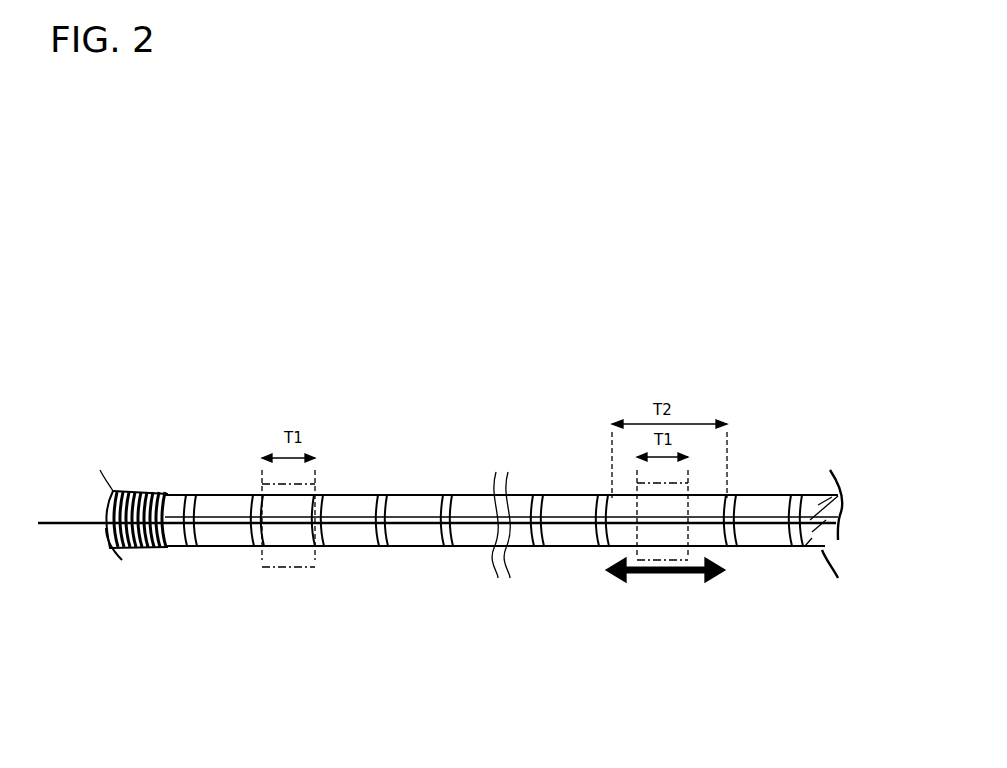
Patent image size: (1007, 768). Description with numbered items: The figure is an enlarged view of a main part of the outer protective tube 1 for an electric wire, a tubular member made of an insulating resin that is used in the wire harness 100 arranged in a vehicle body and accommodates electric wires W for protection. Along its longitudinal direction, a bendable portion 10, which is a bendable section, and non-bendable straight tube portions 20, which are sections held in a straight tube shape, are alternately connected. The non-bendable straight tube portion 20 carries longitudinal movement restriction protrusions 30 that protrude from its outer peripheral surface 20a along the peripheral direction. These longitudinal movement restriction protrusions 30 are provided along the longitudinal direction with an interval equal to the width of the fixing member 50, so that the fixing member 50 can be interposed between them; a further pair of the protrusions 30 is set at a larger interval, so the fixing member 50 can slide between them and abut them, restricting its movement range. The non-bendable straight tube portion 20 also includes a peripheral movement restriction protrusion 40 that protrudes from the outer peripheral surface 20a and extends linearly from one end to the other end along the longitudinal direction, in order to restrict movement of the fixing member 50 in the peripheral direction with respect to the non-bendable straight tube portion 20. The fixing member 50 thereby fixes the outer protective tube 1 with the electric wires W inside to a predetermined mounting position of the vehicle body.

The outer protective tube 1 is at (459, 370).
The bendable portion 10 is at (158, 485).
The non-bendable straight tube portion 20 is at (347, 492).
The outer peripheral surface 20a is at (412, 547).
The longitudinal movement restriction protrusion 30 is at (385, 495).
The peripheral movement restriction protrusion 40 is at (235, 510).
The fixing member 50 is at (263, 567).
The wire harness 100 is at (328, 490).
The electric wire W is at (803, 495).